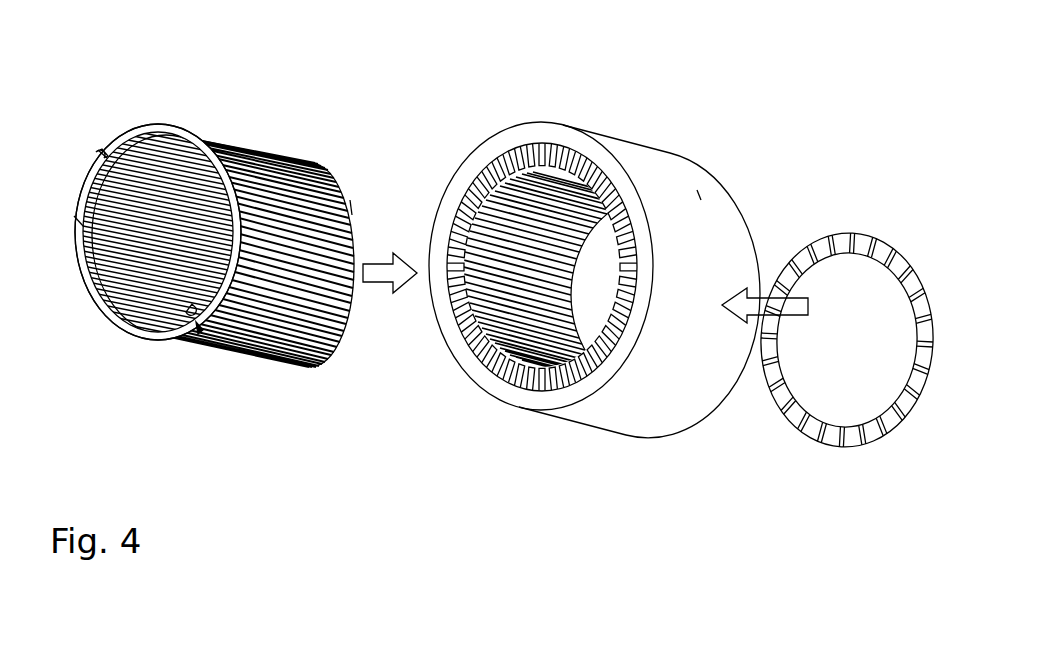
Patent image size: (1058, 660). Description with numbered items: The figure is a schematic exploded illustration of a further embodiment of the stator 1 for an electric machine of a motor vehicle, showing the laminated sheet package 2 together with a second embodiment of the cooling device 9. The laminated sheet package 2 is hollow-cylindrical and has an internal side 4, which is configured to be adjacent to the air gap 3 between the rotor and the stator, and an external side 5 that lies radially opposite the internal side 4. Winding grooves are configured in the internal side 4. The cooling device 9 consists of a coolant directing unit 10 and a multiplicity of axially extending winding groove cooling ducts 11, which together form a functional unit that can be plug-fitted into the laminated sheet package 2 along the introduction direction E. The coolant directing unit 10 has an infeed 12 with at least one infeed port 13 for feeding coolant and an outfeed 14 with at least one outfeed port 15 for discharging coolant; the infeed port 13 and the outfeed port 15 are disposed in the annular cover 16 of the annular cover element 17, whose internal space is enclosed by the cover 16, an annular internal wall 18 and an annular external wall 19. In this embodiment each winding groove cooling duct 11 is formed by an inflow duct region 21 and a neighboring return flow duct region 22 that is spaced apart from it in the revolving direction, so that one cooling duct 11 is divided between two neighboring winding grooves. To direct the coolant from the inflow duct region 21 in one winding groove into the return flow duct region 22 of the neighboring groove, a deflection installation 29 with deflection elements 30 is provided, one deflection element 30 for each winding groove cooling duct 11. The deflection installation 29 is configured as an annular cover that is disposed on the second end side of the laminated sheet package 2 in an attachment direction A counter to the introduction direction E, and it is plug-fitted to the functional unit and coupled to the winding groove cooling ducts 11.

The stator 1 is at (455, 78).
The laminated sheet package 2 is at (637, 137).
The air gap 3 is at (518, 322).
The internal side 4 is at (585, 277).
The external side 5 is at (700, 197).
The cooling device 9 is at (140, 98).
The coolant directing unit 10 is at (98, 338).
The winding groove cooling duct 11 is at (334, 174).
The infeed 12 is at (104, 140).
The infeed port 13 is at (96, 152).
The outfeed 14 is at (200, 344).
The outfeed port 15 is at (188, 330).
The annular cover 16 is at (80, 224).
The cover element 17 is at (174, 131).
The internal wall 18 is at (89, 258).
The external wall 19 is at (268, 364).
The inflow duct region 21 is at (350, 210).
The return flow duct region 22 is at (345, 207).
The deflection installation 29 is at (898, 252).
The deflection element 30 is at (850, 353).
The introduction direction E is at (378, 273).
The attachment direction A is at (795, 316).